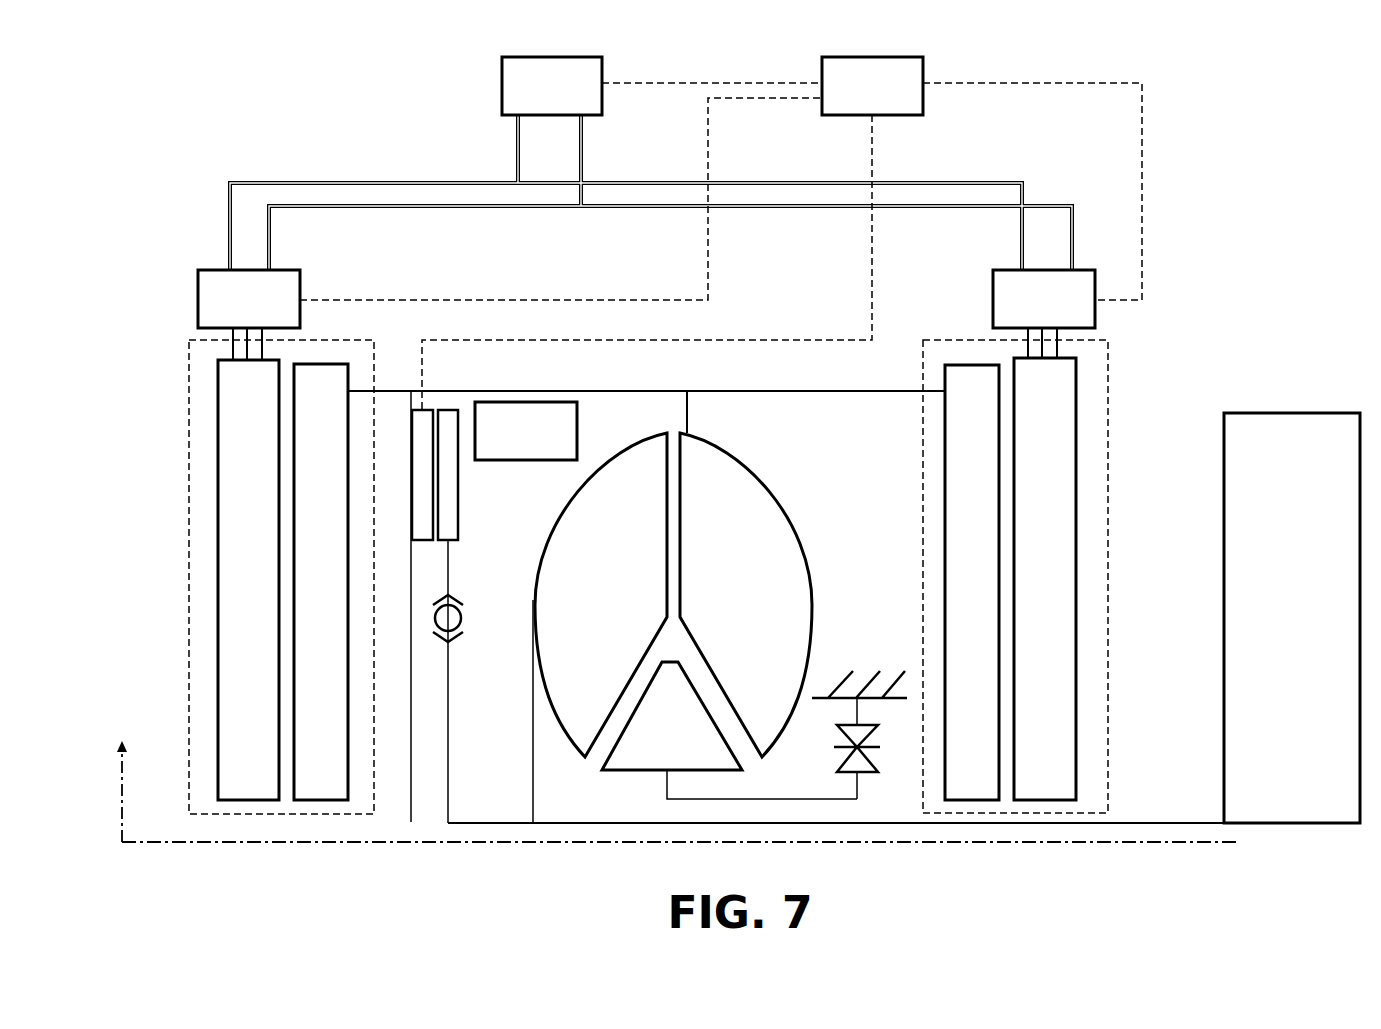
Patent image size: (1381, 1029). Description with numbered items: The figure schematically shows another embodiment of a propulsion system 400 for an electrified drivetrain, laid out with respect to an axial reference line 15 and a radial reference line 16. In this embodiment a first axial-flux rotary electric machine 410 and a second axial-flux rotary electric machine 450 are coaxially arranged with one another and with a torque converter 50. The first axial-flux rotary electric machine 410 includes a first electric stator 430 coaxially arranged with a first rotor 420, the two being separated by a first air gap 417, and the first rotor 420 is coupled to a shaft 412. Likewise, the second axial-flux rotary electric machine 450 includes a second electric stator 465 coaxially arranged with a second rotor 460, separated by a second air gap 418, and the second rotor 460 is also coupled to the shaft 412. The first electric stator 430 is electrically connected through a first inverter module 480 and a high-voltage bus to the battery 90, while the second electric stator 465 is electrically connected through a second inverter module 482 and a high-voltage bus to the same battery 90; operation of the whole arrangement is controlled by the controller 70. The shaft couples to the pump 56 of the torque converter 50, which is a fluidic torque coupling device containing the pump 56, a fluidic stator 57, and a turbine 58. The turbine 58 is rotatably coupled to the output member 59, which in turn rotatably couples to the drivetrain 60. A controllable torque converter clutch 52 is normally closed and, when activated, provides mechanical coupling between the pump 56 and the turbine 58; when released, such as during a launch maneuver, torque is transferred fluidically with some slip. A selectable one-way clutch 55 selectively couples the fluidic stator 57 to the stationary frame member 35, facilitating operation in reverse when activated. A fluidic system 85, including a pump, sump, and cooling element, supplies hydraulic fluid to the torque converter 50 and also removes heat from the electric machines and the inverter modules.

The propulsion system 400 is at (278, 88).
The battery 90 is at (552, 86).
The controller 70 is at (872, 86).
The first inverter module 480 is at (249, 315).
The second inverter module 482 is at (1044, 314).
The shaft 412 is at (888, 390).
The fluidic system 85 is at (526, 431).
The torque converter 50 is at (696, 628).
The torque converter clutch 52 is at (458, 513).
The turbine 58 is at (601, 595).
The pump 56 is at (746, 595).
The fluidic stator 57 is at (672, 716).
The stationary frame member 35 is at (818, 697).
The selectable one-way clutch 55 is at (875, 750).
The drivetrain 60 is at (1292, 618).
The output member 59 is at (1190, 821).
The radial reference line 16 is at (122, 800).
The axial reference line 15 is at (1218, 840).
The first axial-flux rotary electric machine 410 is at (200, 819).
The first electric stator 430 is at (257, 803).
The first rotor 420 is at (338, 803).
The first air gap 417 is at (287, 803).
The second axial-flux rotary electric machine 450 is at (1114, 783).
The second rotor 460 is at (960, 802).
The second electric stator 465 is at (1043, 802).
The second air gap 418 is at (1005, 803).